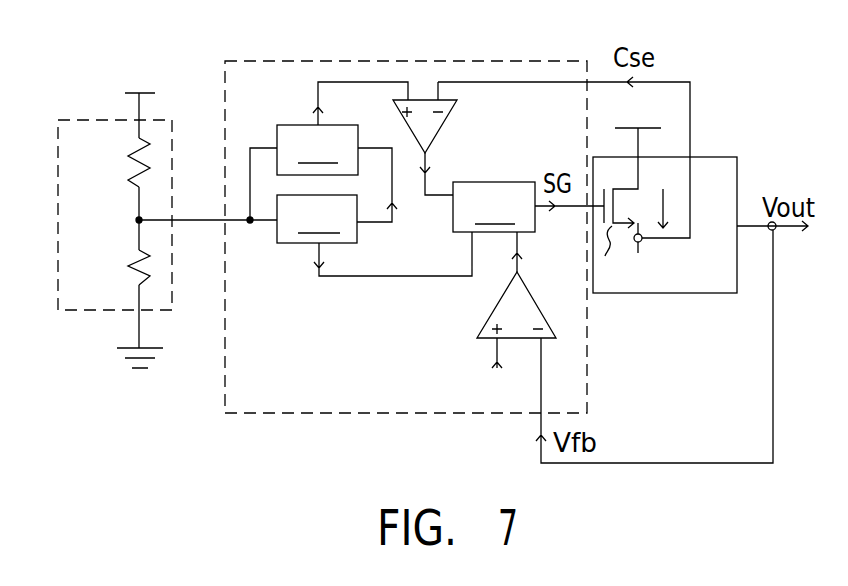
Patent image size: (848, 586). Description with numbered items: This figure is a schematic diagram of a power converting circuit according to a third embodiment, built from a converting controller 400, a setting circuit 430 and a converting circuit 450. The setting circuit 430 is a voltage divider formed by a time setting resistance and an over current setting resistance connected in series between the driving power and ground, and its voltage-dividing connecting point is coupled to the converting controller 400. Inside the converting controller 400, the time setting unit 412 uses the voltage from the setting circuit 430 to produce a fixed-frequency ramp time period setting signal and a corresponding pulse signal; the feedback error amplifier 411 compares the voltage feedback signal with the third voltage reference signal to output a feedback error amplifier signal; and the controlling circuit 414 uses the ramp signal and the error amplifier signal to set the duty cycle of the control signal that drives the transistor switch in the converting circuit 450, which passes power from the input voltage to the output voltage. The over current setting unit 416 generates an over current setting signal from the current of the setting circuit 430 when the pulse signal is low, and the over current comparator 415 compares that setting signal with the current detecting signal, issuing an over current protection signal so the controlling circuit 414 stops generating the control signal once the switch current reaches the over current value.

The converting controller 400 is at (230, 62).
The feedback error amplifier 411 is at (494, 313).
The time setting unit 412 is at (317, 219).
The controlling circuit 414 is at (494, 207).
The over current comparator 415 is at (442, 125).
The over current setting unit 416 is at (317, 150).
The setting circuit 430 is at (97, 120).
The converting circuit 450 is at (737, 170).